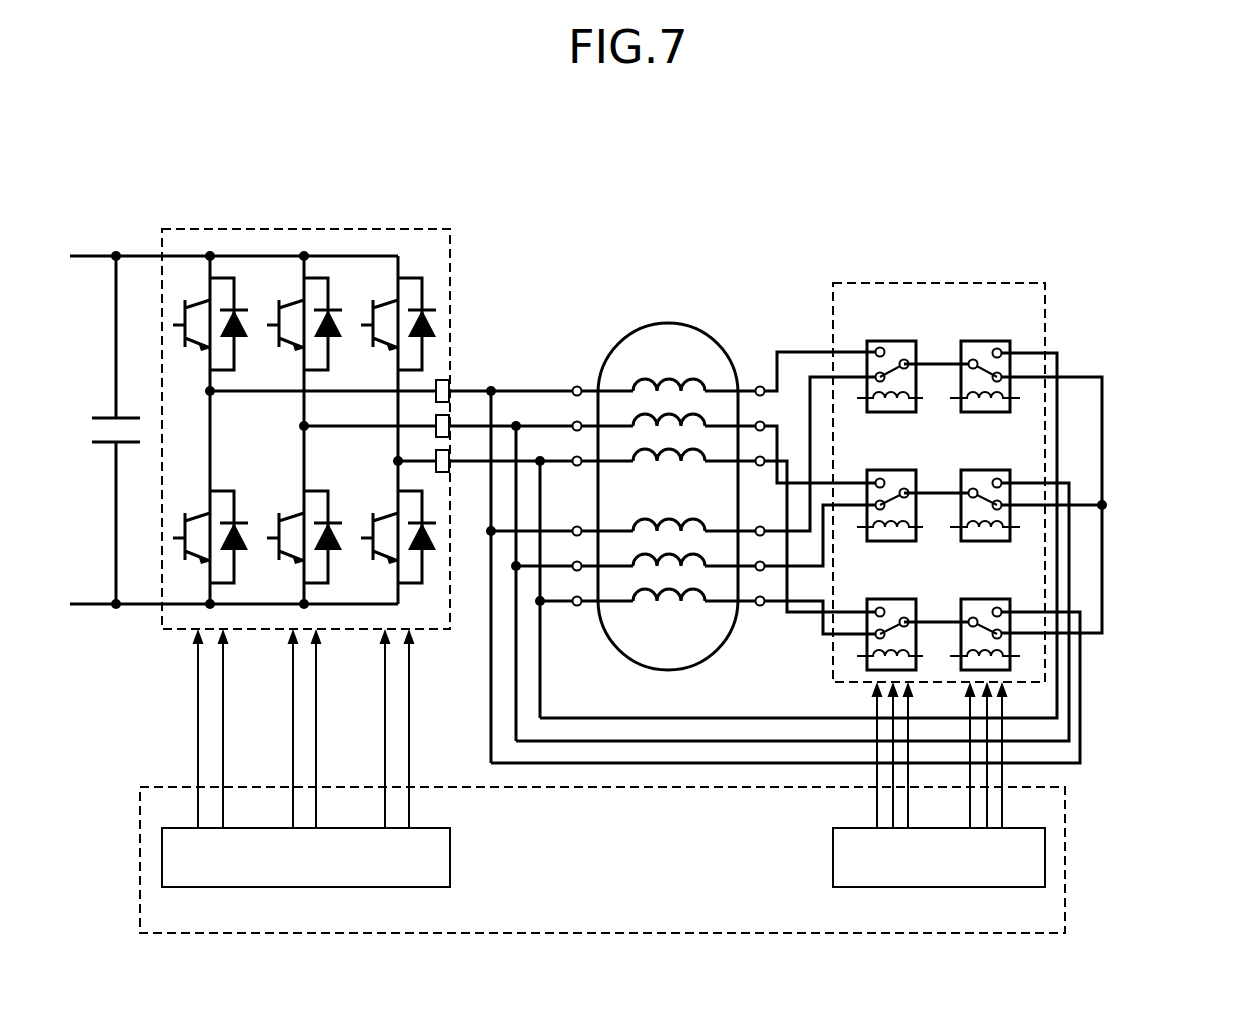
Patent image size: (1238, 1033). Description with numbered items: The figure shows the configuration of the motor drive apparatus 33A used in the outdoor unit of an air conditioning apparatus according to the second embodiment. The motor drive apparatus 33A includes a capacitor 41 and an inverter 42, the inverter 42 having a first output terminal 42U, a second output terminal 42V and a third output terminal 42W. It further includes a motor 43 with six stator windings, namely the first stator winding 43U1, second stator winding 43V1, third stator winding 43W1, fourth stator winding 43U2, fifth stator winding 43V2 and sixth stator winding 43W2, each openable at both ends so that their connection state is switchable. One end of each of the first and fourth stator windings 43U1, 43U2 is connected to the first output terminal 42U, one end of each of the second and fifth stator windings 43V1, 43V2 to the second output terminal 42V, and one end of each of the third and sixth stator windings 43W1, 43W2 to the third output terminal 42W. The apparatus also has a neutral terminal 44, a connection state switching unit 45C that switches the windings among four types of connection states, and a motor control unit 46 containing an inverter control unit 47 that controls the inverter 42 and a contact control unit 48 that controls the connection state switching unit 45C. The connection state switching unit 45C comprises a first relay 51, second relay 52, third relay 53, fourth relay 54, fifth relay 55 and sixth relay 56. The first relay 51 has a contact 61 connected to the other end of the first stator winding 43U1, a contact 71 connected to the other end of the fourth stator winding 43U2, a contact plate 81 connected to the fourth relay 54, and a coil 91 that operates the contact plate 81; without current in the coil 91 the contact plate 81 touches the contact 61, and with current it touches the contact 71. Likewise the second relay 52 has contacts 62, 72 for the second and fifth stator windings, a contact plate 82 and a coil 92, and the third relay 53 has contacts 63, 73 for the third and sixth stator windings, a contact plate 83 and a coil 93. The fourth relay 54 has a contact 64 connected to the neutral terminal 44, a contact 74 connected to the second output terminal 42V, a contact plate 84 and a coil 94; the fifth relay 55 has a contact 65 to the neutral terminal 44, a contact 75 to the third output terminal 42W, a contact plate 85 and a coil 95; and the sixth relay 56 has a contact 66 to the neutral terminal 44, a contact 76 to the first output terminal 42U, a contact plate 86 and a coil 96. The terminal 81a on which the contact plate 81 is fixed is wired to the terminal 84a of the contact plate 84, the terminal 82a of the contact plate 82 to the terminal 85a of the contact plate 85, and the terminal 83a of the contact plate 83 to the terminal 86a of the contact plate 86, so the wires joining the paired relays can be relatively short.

The motor drive apparatus 33A is at (662, 158).
The capacitor 41 is at (106, 412).
The inverter 42 is at (262, 229).
The first output terminal 42U is at (436, 396).
The second output terminal 42V is at (436, 430).
The third output terminal 42W is at (436, 464).
The motor 43 is at (642, 484).
The first stator winding 43U1 is at (615, 534).
The fourth stator winding 43U2 is at (618, 390).
The second stator winding 43V1 is at (716, 568).
The fifth stator winding 43V2 is at (618, 425).
The third stator winding 43W1 is at (606, 603).
The sixth stator winding 43W2 is at (608, 463).
The neutral terminal 44 is at (1108, 505).
The connection state switching unit 45C is at (940, 283).
The motor control unit 46 is at (631, 781).
The inverter control unit 47 is at (422, 828).
The contact control unit 48 is at (1012, 828).
The first relay 51 is at (861, 414).
The second relay 52 is at (870, 496).
The third relay 53 is at (858, 582).
The fourth relay 54 is at (1041, 465).
The fifth relay 55 is at (1043, 491).
The sixth relay 56 is at (1042, 622).
The contact 61 is at (862, 379).
The contact 62 is at (863, 507).
The contact 63 is at (862, 635).
The contact 64 is at (1013, 381).
The contact 65 is at (1013, 514).
The contact 66 is at (1013, 638).
The contact 71 is at (862, 350).
The contact 72 is at (862, 482).
The contact 73 is at (862, 612).
The contact 74 is at (1013, 348).
The contact 75 is at (1013, 479).
The contact 76 is at (1013, 609).
The contact plate 81 is at (897, 350).
The terminal 81a is at (912, 356).
The contact plate 82 is at (906, 447).
The terminal 82a is at (913, 482).
The contact plate 83 is at (895, 607).
The terminal 83a is at (912, 611).
The contact plate 84 is at (1013, 362).
The terminal 84a is at (1010, 334).
The contact plate 85 is at (1013, 492).
The terminal 85a is at (980, 482).
The contact plate 86 is at (1013, 624).
The terminal 86a is at (985, 610).
The coil 91 is at (943, 396).
The coil 92 is at (940, 524).
The coil 93 is at (858, 657).
The coil 94 is at (1015, 396).
The coil 95 is at (1015, 528).
The coil 96 is at (1015, 657).